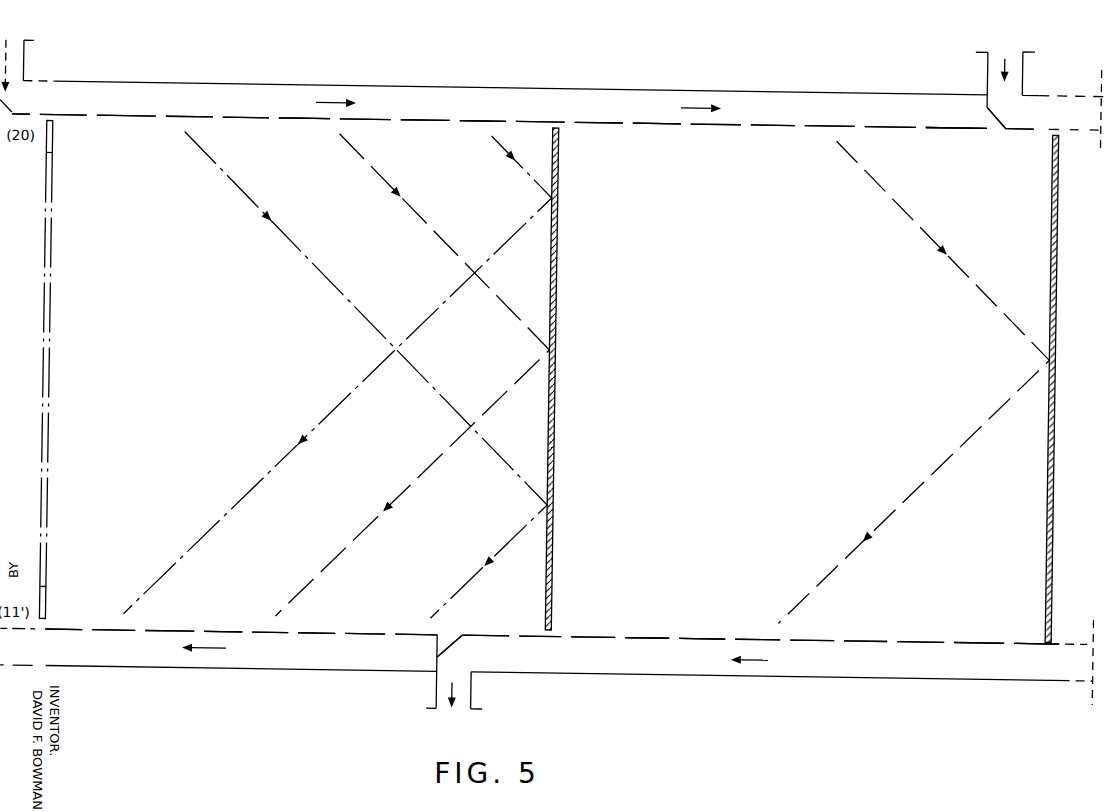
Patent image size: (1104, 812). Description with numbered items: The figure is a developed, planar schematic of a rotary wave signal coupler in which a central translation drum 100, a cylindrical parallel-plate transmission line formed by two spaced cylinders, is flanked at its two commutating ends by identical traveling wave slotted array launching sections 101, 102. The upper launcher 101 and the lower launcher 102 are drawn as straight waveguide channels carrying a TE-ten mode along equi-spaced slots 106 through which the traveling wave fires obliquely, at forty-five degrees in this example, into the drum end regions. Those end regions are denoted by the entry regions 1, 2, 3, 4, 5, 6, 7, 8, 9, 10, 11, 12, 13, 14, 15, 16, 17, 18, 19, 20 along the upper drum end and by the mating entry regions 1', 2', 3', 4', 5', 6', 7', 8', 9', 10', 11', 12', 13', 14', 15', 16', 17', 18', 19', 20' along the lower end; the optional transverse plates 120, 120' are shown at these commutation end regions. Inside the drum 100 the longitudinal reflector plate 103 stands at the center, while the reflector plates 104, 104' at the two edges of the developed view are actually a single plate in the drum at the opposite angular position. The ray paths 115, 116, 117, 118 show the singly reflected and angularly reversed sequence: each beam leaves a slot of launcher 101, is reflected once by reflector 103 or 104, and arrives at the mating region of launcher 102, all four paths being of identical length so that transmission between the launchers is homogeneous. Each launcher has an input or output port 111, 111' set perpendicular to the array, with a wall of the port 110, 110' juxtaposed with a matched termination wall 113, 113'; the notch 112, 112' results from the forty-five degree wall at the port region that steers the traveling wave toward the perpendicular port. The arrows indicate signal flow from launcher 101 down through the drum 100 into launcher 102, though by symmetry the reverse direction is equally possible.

The central translation drum 100 is at (744, 370).
The traveling wave slotted array launching section 101 is at (543, 86).
The traveling wave slotted array launching section 102 is at (515, 680).
The longitudinal reflector plate 103 is at (556, 293).
The longitudinal reflector plate 104 is at (1071, 389).
The longitudinal reflector plate 104' is at (73, 369).
The equi-spaced slot 106 is at (266, 122).
The input port wall 110 is at (958, 80).
The input port wall 110' is at (408, 671).
The input port 111 is at (1052, 67).
The input port 111' is at (483, 706).
The notch 112 is at (1016, 116).
The notch 112' is at (472, 651).
The termination wall 113 is at (966, 116).
The termination wall 113' is at (420, 649).
The ray path 115 is at (268, 226).
The ray path 116 is at (396, 201).
The ray path 117 is at (531, 183).
The ray path 118 is at (926, 231).
The transverse plate 120 is at (588, 366).
The transverse plate 120' is at (232, 595).
The entry region 1 is at (62, 128).
The entry region 2 is at (125, 129).
The entry region 3 is at (188, 130).
The entry region 4 is at (244, 131).
The entry region 5 is at (300, 132).
The entry region 6 is at (303, 132).
The entry region 7 is at (364, 133).
The entry region 8 is at (424, 134).
The entry region 9 is at (482, 135).
The entry region 10 is at (539, 135).
The entry region 11 is at (596, 136).
The entry region 12 is at (650, 137).
The entry region 13 is at (660, 137).
The entry region 14 is at (715, 138).
The entry region 15 is at (772, 139).
The entry region 16 is at (829, 140).
The entry region 17 is at (889, 141).
The entry region 18 is at (955, 141).
The entry region 19 is at (958, 142).
The entry region 20 is at (1023, 143).
The entry region 1' is at (540, 625).
The entry region 2' is at (485, 624).
The entry region 3' is at (416, 623).
The entry region 4' is at (365, 622).
The entry region 5' is at (316, 621).
The entry region 6' is at (270, 621).
The entry region 7' is at (223, 620).
The entry region 8' is at (169, 619).
The entry region 9' is at (113, 618).
The entry region 10' is at (64, 618).
The entry region 11' is at (1031, 632).
The entry region 12' is at (978, 631).
The entry region 13' is at (920, 630).
The entry region 14' is at (865, 629).
The entry region 15' is at (812, 629).
The entry region 16' is at (757, 628).
The entry region 17' is at (704, 627).
The entry region 18' is at (653, 626).
The entry region 19' is at (640, 626).
The entry region 20' is at (589, 625).